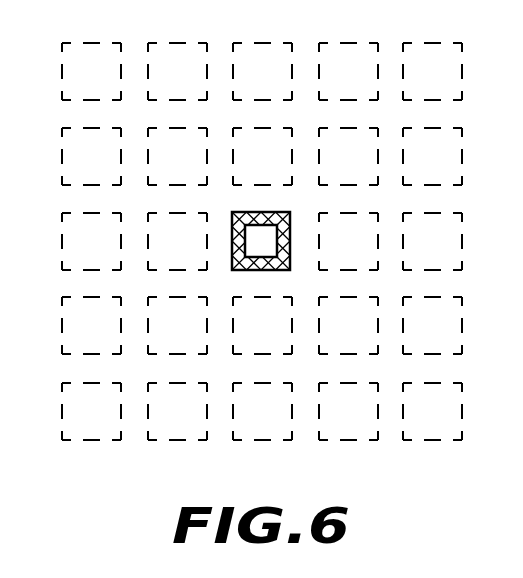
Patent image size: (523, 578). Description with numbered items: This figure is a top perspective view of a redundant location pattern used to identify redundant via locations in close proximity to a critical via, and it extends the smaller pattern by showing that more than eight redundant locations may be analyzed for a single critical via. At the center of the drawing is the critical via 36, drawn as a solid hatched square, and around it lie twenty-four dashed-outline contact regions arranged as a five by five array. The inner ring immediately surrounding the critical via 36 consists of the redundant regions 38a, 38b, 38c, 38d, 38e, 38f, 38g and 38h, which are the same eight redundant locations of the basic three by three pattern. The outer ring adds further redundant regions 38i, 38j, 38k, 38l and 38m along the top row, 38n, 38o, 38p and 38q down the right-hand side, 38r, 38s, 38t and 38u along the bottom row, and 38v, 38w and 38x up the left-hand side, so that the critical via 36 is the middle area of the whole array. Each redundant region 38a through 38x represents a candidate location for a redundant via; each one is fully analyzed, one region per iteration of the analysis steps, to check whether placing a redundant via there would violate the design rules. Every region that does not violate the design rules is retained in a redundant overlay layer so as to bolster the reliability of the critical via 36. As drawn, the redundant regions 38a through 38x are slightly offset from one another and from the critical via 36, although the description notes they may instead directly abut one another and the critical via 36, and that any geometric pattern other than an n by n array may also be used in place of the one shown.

The critical via 36 is at (283, 266).
The redundant region 38a is at (177, 156).
The redundant region 38b is at (262, 156).
The redundant region 38c is at (348, 156).
The redundant region 38d is at (348, 241).
The redundant region 38e is at (348, 325).
The redundant region 38f is at (262, 325).
The redundant region 38g is at (177, 325).
The redundant region 38h is at (177, 241).
The redundant region 38i is at (91, 71).
The redundant region 38j is at (177, 71).
The redundant region 38k is at (262, 71).
The redundant region 38l is at (348, 71).
The redundant region 38m is at (432, 71).
The redundant region 38n is at (432, 156).
The redundant region 38o is at (432, 241).
The redundant region 38p is at (432, 325).
The redundant region 38q is at (432, 411).
The redundant region 38r is at (348, 411).
The redundant region 38s is at (262, 411).
The redundant region 38t is at (177, 411).
The redundant region 38u is at (91, 411).
The redundant region 38v is at (91, 325).
The redundant region 38w is at (91, 241).
The redundant region 38x is at (91, 156).